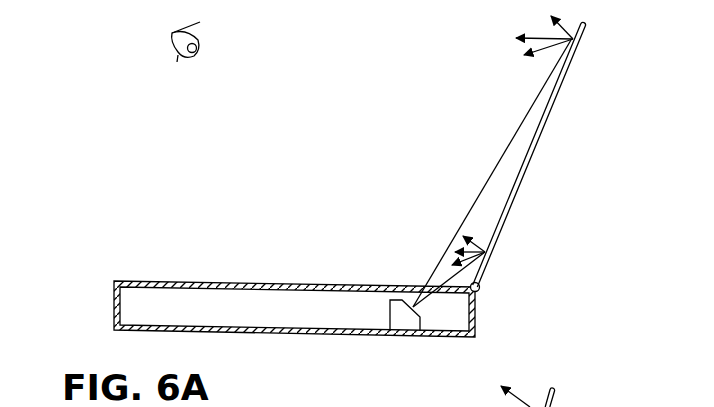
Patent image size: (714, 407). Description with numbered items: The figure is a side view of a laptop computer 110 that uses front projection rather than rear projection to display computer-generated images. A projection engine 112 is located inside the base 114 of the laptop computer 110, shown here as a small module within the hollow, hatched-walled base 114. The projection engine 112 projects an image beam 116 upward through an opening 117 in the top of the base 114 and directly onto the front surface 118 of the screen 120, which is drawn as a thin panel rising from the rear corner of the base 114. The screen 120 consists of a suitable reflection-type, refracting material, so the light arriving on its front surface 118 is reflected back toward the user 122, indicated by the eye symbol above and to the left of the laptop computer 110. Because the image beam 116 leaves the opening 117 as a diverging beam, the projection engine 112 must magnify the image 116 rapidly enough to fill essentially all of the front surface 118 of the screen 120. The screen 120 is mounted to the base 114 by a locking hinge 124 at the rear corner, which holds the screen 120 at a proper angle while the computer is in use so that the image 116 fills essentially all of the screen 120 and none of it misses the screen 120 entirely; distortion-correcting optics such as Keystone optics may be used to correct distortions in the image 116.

The laptop computer 110 is at (294, 279).
The projection engine 112 is at (390, 318).
The base 114 is at (267, 281).
The image beam 116 is at (471, 189).
The opening 117 is at (425, 278).
The front surface 118 is at (532, 144).
The screen 120 is at (587, 50).
The user 122 is at (170, 38).
The locking hinge 124 is at (481, 287).